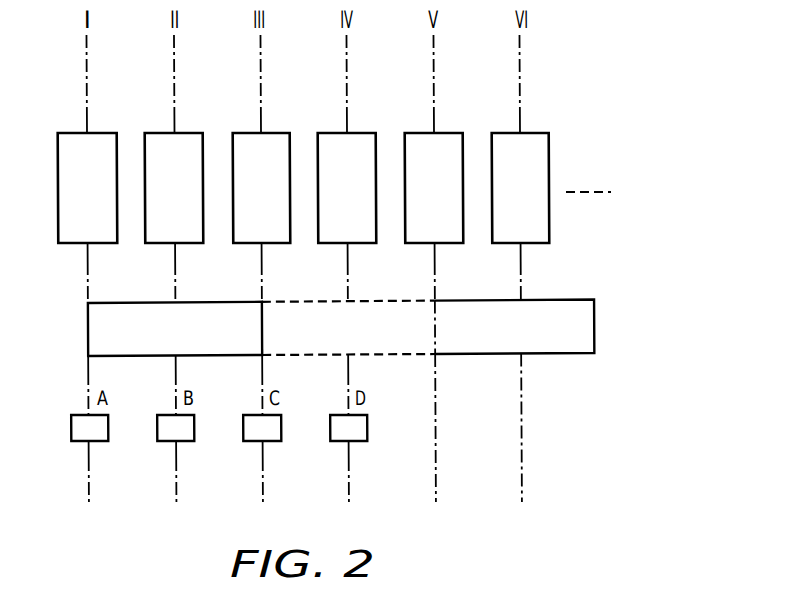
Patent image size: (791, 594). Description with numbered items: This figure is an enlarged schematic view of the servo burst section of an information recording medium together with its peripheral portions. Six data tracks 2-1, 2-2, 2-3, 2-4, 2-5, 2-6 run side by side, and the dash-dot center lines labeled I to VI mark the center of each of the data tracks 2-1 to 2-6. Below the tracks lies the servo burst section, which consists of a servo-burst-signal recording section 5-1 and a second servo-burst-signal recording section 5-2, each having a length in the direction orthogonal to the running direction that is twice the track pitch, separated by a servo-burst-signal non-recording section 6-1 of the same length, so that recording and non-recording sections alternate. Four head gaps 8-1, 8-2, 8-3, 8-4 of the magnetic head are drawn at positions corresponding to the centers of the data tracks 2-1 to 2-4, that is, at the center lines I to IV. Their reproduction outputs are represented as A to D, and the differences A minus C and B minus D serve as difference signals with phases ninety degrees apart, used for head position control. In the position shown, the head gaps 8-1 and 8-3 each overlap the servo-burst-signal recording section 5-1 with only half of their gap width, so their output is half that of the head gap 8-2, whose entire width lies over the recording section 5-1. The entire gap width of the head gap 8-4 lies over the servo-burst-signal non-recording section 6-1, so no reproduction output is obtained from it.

The data track 2-1 is at (61, 139).
The data track 2-2 is at (148, 139).
The data track 2-3 is at (235, 139).
The data track 2-4 is at (323, 139).
The data track 2-5 is at (415, 139).
The data track 2-6 is at (502, 139).
The servo-burst-signal recording section 5-1 is at (86, 330).
The servo-burst-signal recording section 5-2 is at (574, 317).
The servo-burst-signal non-recording section 6-1 is at (315, 308).
The head gap 8-1 is at (77, 443).
The head gap 8-2 is at (165, 443).
The head gap 8-3 is at (251, 443).
The head gap 8-4 is at (340, 443).